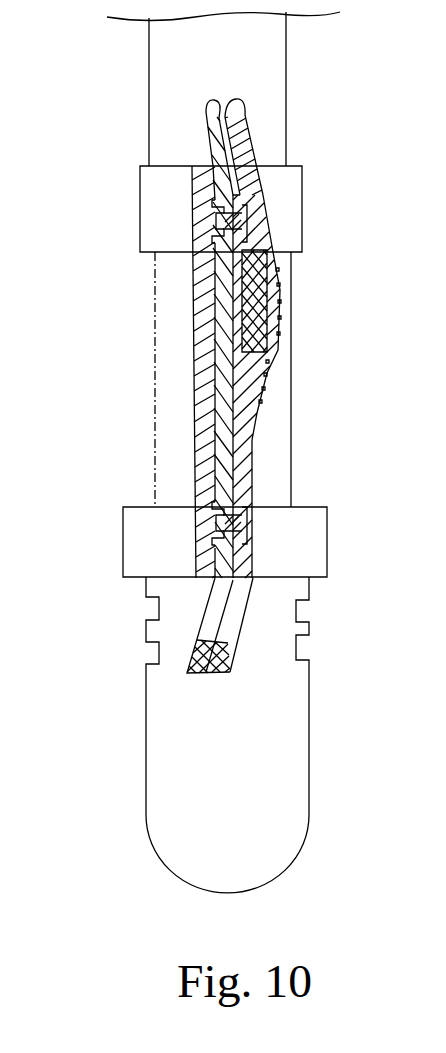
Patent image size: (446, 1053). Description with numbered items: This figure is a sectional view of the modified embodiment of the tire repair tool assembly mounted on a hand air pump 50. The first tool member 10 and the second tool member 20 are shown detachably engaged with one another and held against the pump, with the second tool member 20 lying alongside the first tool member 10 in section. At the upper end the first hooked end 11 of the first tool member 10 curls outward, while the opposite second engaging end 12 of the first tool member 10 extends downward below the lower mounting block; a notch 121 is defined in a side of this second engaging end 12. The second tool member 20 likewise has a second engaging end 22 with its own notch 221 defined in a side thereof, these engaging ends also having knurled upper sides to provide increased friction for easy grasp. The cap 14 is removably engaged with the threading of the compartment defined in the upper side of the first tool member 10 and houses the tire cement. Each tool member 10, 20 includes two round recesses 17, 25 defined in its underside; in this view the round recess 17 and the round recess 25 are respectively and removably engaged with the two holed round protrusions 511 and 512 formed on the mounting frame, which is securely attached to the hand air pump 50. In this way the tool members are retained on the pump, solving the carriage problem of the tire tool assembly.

The first tool member 10 is at (245, 430).
The first hooked end 11 is at (241, 108).
The second engaging end 12 is at (200, 673).
The cap 14 is at (279, 300).
The round recess 17 is at (248, 520).
The second tool member 20 is at (217, 481).
The second engaging end 22 is at (200, 675).
The round recess 25 is at (253, 553).
The hand air pump 50 is at (172, 365).
The notch 121 is at (237, 607).
The notch 221 is at (217, 622).
The holed round protrusion 511 is at (218, 208).
The holed round protrusion 512 is at (218, 538).